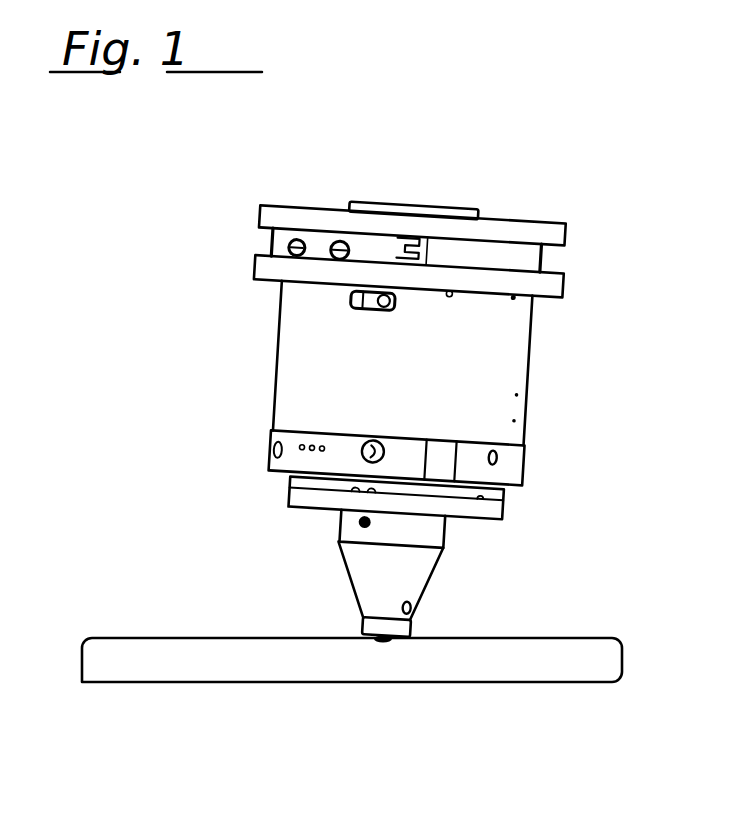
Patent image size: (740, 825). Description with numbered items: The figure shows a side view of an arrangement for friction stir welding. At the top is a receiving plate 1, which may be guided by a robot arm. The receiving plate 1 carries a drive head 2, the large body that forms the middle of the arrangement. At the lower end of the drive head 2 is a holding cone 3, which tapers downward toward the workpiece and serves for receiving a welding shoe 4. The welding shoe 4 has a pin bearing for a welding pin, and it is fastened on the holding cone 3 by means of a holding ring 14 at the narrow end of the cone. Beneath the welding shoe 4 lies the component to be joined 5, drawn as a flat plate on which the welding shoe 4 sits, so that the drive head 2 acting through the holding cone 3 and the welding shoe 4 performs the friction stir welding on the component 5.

The receiving plate 1 is at (457, 205).
The drive head 2 is at (472, 355).
The holding cone 3 is at (418, 565).
The holding ring 14 is at (363, 620).
The welding shoe 4 is at (385, 640).
The component to be joined 5 is at (278, 662).